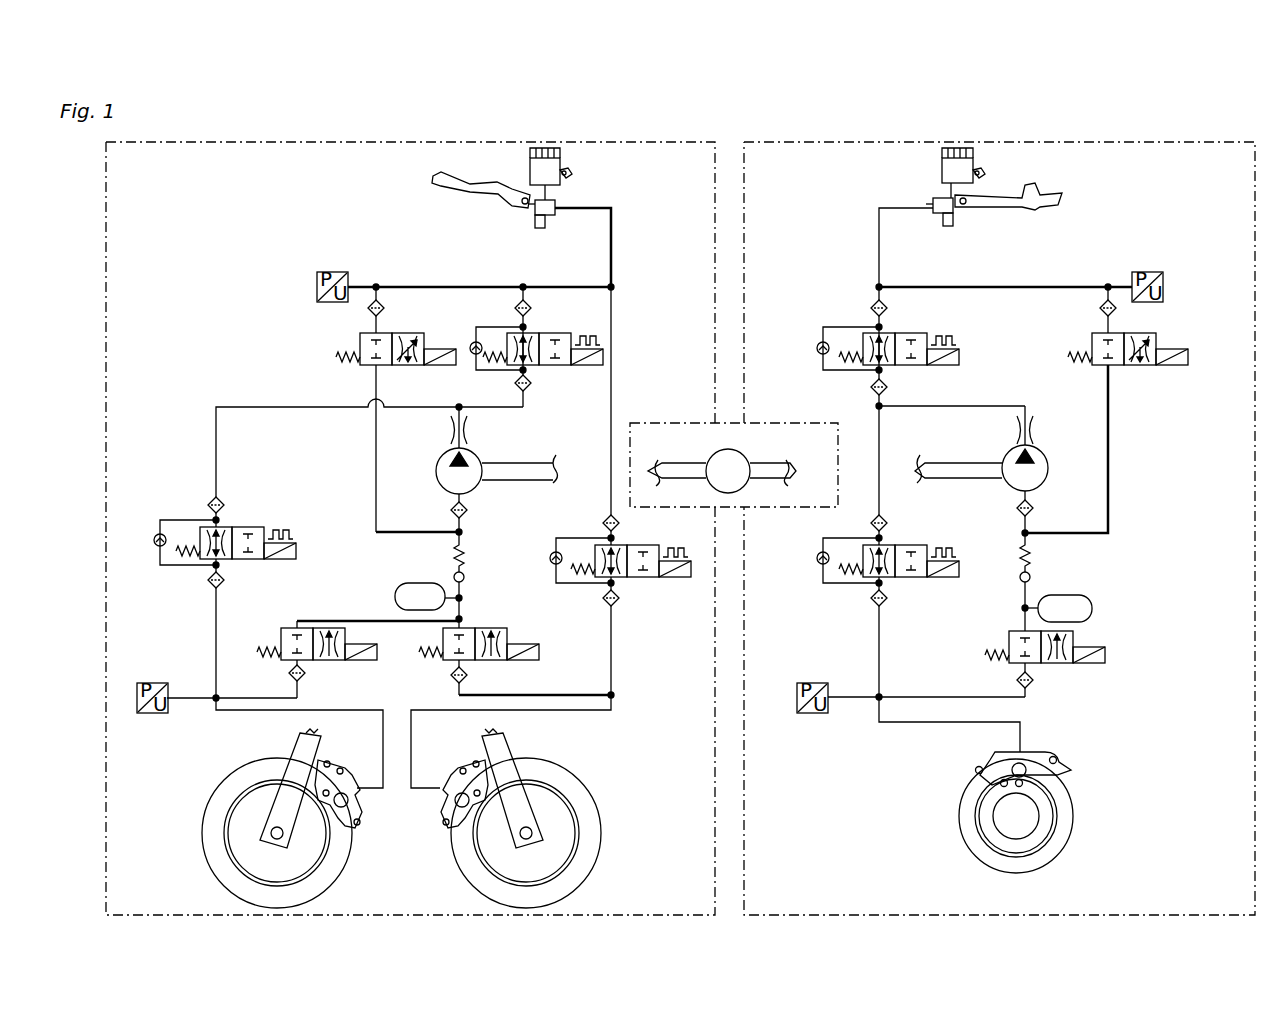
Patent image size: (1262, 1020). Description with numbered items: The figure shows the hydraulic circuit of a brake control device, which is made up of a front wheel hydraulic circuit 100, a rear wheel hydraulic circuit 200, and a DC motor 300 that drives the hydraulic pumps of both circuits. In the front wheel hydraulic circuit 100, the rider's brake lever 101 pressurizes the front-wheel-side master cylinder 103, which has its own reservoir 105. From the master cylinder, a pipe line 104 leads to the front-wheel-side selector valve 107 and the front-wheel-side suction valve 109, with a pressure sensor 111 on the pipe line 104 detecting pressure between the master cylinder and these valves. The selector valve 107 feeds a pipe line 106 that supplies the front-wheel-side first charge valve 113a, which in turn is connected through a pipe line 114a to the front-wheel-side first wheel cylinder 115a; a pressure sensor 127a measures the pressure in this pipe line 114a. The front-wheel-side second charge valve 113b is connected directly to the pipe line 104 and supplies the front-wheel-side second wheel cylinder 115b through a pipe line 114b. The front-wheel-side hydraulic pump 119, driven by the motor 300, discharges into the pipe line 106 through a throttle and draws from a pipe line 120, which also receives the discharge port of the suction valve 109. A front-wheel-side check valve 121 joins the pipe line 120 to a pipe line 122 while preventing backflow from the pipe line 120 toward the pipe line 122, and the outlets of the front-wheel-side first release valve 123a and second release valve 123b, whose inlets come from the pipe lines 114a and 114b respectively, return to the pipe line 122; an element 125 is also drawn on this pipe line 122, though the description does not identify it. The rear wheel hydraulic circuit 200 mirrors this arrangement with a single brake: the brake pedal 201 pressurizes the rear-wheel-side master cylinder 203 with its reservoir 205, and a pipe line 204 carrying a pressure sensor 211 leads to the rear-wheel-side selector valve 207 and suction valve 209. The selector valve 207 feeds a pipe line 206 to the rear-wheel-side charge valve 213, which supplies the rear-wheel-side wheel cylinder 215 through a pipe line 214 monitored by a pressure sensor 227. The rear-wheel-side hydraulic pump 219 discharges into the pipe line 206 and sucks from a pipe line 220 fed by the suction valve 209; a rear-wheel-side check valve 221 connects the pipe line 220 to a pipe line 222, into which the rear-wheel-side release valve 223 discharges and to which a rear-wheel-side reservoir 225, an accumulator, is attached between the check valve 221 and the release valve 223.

The front wheel hydraulic circuit 100 is at (163, 178).
The brake lever 101 is at (455, 187).
The front-wheel-side master cylinder 103 is at (545, 216).
The pipe line 104 is at (519, 287).
The reservoir 105 is at (568, 167).
The pipe line 106 is at (216, 442).
The front-wheel-side selector valve 107 is at (544, 333).
The front-wheel-side suction valve 109 is at (360, 340).
The pressure sensor 111 is at (336, 272).
The front-wheel-side first charge valve 113a is at (240, 559).
The front-wheel-side second charge valve 113b is at (630, 582).
The pipe line 114a is at (216, 659).
The pipe line 114b is at (612, 676).
The front-wheel-side first wheel cylinder 115a is at (351, 804).
The front-wheel-side second wheel cylinder 115b is at (460, 778).
The front-wheel-side hydraulic pump 119 is at (473, 484).
The pipe line 120 is at (376, 480).
The front-wheel-side check valve 121 is at (463, 562).
The pipe line 122 is at (463, 602).
The front-wheel-side first release valve 123a is at (322, 660).
The front-wheel-side second release valve 123b is at (505, 650).
The accumulator 125 is at (398, 590).
The pressure sensor 127a is at (152, 713).
The rear wheel hydraulic circuit 200 is at (798, 178).
The brake pedal 201 is at (1060, 193).
The rear-wheel-side master cylinder 203 is at (940, 213).
The pipe line 204 is at (879, 257).
The reservoir 205 is at (942, 161).
The pipe line 206 is at (960, 406).
The rear-wheel-side selector valve 207 is at (910, 334).
The rear-wheel-side suction valve 209 is at (1135, 366).
The pressure sensor 211 is at (1148, 272).
The rear-wheel-side charge valve 213 is at (899, 545).
The pipe line 214 is at (879, 680).
The rear-wheel-side wheel cylinder 215 is at (1030, 755).
The rear-wheel-side hydraulic pump 219 is at (1029, 448).
The pipe line 220 is at (1110, 440).
The rear-wheel-side check valve 221 is at (1022, 560).
The pipe line 222 is at (1022, 614).
The rear-wheel-side release valve 223 is at (1079, 646).
The rear-wheel-side reservoir 225 is at (1065, 595).
The pressure sensor 227 is at (815, 682).
The DC motor 300 is at (748, 454).